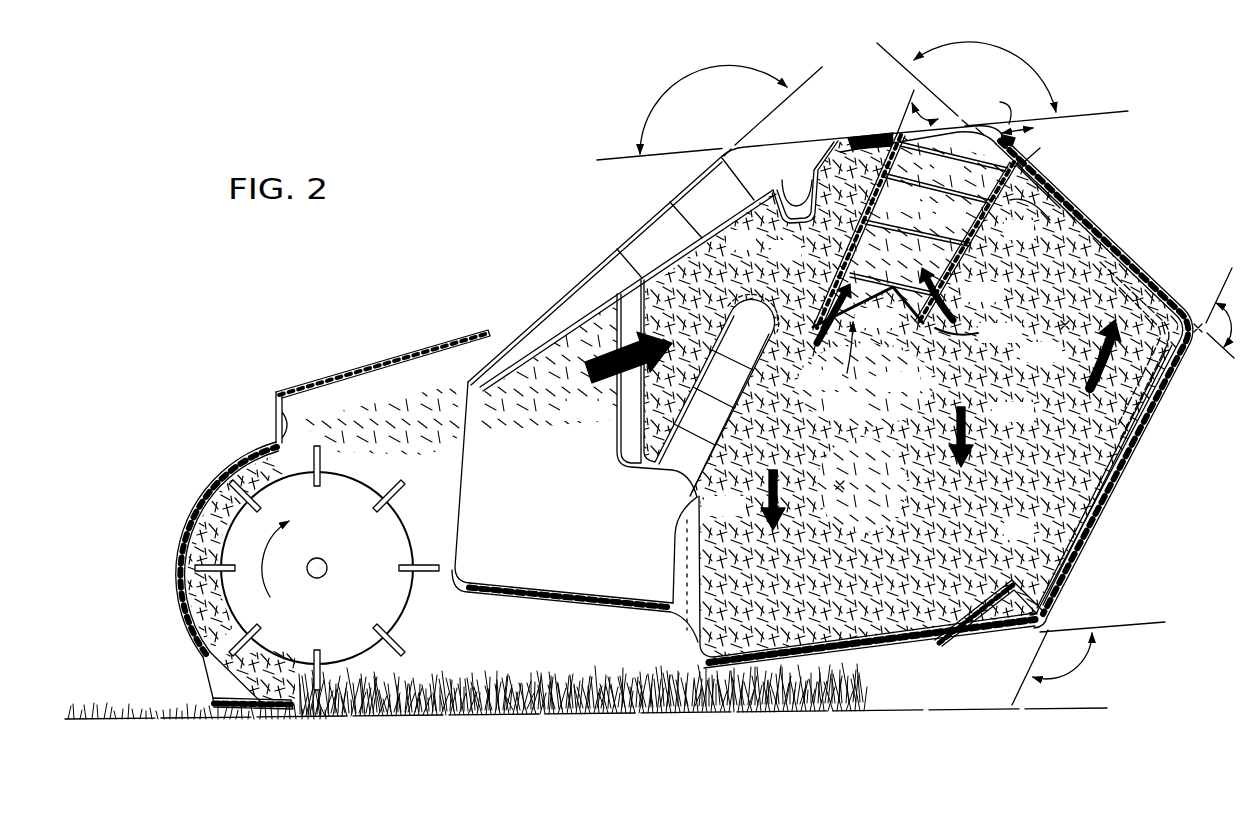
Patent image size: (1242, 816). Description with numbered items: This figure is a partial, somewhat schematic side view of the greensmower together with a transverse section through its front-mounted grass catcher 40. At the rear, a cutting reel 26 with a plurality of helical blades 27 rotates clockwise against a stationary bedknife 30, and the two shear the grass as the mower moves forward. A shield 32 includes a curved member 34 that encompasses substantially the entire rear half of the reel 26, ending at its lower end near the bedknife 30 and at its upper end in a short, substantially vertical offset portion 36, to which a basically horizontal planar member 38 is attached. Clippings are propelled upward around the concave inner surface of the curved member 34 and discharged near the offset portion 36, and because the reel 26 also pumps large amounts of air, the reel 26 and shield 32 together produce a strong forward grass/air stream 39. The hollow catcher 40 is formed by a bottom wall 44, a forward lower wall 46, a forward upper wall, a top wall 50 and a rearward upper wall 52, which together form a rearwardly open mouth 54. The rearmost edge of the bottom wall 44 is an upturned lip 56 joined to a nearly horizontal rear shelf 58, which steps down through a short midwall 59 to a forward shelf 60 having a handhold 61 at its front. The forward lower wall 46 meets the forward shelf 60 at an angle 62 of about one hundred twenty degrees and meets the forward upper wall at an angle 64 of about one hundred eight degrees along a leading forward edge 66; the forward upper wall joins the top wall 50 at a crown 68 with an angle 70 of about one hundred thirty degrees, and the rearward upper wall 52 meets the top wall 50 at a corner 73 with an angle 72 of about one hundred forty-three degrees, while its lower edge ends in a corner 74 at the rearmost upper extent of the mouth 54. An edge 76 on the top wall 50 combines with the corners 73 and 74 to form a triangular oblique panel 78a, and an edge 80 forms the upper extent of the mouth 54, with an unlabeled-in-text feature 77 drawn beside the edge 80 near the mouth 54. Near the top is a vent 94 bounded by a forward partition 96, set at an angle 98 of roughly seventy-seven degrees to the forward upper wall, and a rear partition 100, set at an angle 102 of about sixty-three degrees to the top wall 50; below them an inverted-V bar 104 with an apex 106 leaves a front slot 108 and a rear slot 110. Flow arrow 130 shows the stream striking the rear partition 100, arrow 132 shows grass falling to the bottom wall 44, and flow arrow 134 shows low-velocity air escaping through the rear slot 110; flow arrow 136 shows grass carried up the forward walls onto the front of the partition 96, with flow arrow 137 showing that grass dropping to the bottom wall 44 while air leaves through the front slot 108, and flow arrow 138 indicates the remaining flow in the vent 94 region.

The cutting reel 26 is at (317, 568).
The helical blades 27 is at (373, 632).
The bedknife 30 is at (290, 712).
The shield 32 is at (204, 482).
The curved member 34 is at (176, 575).
The offset portion 36 is at (275, 417).
The planar member 38 is at (380, 360).
The grass/air stream 39 is at (450, 428).
The catcher 40 is at (1088, 48).
The bottom wall 44 is at (822, 680).
The forward lower wall 46 is at (1092, 533).
The top wall 50 is at (866, 133).
The rearward upper wall 52 is at (619, 246).
The mouth 54 is at (463, 528).
The upturned lip 56 is at (458, 584).
The rear shelf 58 is at (553, 604).
The midwall 59 is at (677, 630).
The forward shelf 60 is at (888, 645).
The handhold 61 is at (1030, 562).
The angle 62 is at (1078, 653).
The angle 64 is at (1213, 288).
The forward edge 66 is at (1191, 348).
The crown 68 is at (991, 106).
The angle 70 is at (1020, 62).
The angle 72 is at (727, 72).
The corner 73 is at (752, 138).
The corner 74 is at (452, 397).
The edge 76 is at (845, 140).
The deflector 77 is at (808, 228).
The left triangular oblique panel 78a is at (628, 274).
The edge 80 is at (775, 215).
The vent 94 is at (946, 200).
The partition 96 is at (986, 222).
The angle 98 is at (1043, 208).
The partition 100 is at (866, 205).
The angle 102 is at (929, 100).
The bar 104 is at (877, 340).
The apex 106 is at (852, 313).
The slot 108 is at (977, 333).
The slot 110 is at (827, 357).
The flow arrow 130 is at (617, 398).
The downwardly-directed arrow 132 is at (760, 502).
The flow arrow 134 is at (816, 343).
The flow arrow 136 is at (1088, 360).
The flow arrow 137 is at (980, 412).
The flow arrow 138 is at (947, 295).